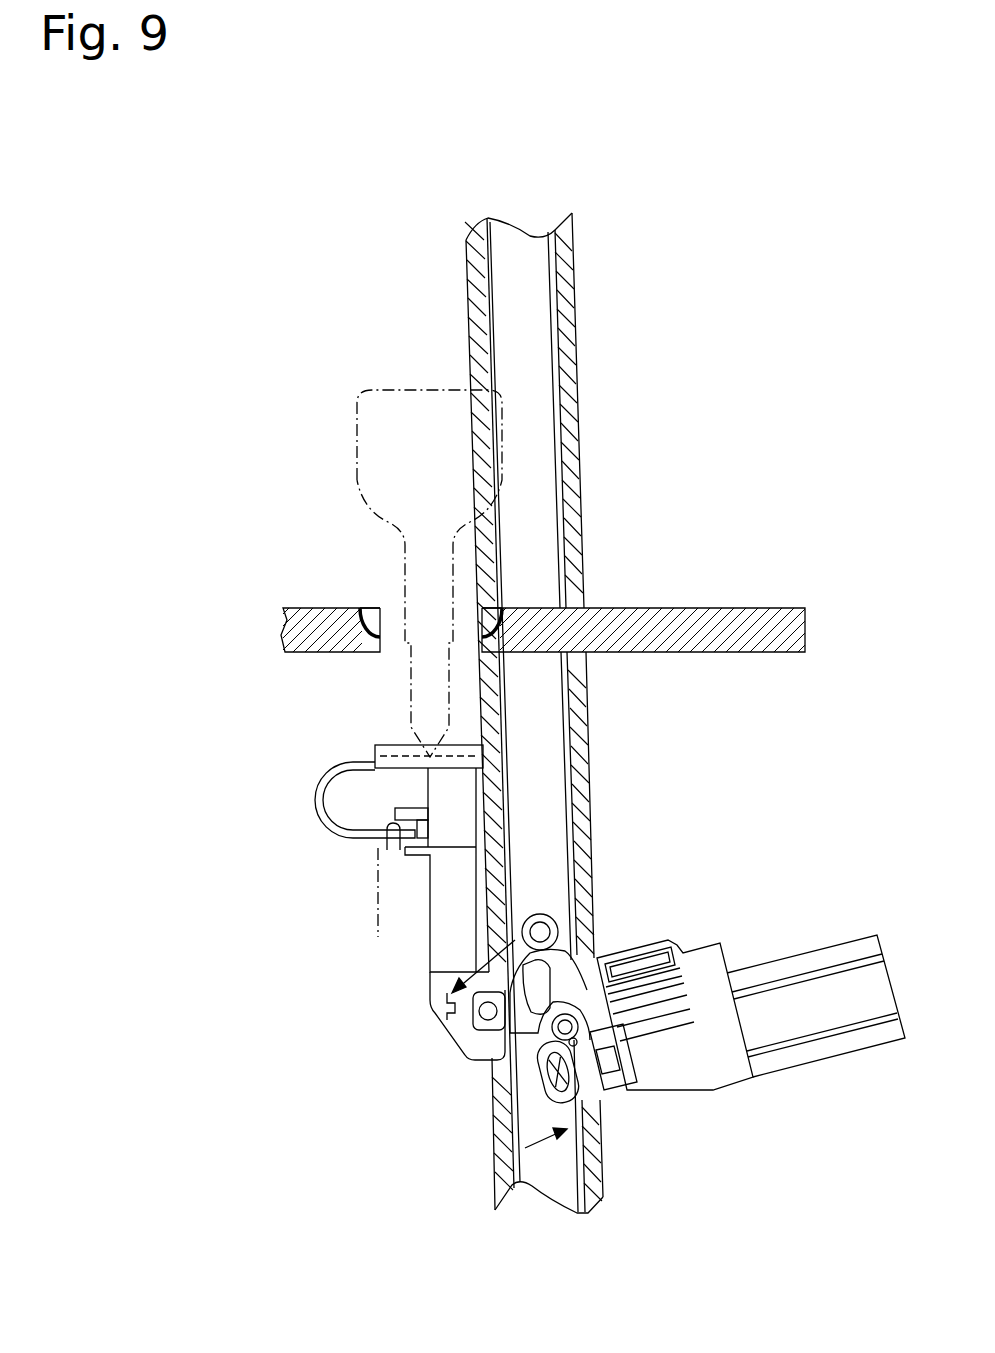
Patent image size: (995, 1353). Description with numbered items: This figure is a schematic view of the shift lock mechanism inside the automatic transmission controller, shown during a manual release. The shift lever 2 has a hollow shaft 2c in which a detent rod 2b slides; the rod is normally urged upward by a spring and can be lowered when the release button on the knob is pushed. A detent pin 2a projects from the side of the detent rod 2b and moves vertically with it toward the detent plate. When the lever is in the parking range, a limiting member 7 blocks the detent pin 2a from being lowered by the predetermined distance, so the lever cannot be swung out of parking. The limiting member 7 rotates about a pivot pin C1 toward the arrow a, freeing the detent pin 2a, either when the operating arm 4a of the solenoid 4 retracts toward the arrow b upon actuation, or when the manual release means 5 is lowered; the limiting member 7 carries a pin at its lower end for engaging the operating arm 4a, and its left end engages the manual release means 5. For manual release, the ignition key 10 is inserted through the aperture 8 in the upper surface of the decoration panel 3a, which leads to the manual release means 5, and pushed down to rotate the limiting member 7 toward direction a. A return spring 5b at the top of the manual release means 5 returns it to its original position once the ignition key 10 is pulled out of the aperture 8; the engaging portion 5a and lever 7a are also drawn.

The shift lever 2 is at (582, 543).
The detent pin 2a is at (557, 918).
The detent rod 2b is at (545, 262).
The hollow shaft 2c is at (576, 290).
The decoration panel 3a is at (330, 608).
The solenoid 4 is at (783, 958).
The operating arm 4a is at (586, 1100).
The manual release means 5 is at (430, 938).
The engaging portion 5a is at (447, 1012).
The return spring 5b is at (333, 768).
The limiting member 7 is at (590, 950).
The lever 7a is at (540, 1092).
The aperture 8 is at (395, 608).
The ignition key 10 is at (378, 390).
The pivot pin C1 is at (553, 1037).
The arrow a is at (482, 966).
The arrow b is at (546, 1150).